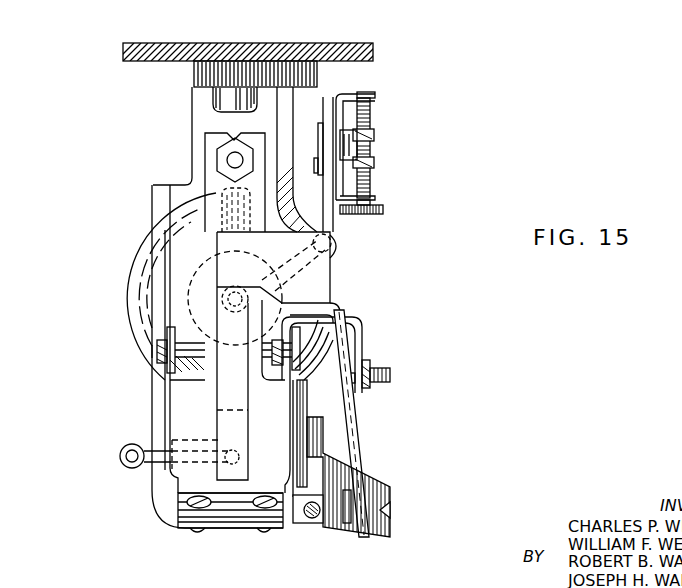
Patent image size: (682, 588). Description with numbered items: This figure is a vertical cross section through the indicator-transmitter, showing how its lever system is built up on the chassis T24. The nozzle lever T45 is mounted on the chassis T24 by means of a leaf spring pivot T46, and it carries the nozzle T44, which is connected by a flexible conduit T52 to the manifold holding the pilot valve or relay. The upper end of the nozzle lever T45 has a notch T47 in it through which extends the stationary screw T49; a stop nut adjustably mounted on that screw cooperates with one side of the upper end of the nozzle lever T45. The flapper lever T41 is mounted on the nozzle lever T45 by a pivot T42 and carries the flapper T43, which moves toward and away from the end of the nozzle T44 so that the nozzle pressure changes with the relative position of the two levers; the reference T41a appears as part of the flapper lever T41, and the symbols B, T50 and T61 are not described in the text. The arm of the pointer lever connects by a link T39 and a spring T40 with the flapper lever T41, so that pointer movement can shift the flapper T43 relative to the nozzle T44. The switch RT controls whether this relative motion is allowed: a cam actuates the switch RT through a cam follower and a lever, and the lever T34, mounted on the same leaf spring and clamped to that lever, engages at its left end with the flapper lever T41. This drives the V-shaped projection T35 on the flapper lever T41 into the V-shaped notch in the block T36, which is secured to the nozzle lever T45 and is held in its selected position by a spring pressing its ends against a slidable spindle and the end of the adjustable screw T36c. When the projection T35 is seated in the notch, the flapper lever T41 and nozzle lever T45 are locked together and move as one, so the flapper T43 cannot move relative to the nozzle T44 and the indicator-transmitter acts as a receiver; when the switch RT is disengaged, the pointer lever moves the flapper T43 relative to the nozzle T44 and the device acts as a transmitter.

The chassis T24 is at (270, 49).
The notch T47 is at (235, 136).
The stationary screw T49 is at (232, 158).
The nozzle lever T45 is at (213, 176).
The spring T40 is at (318, 133).
The link T39 is at (324, 166).
The disc / cam B is at (160, 258).
The flapper lever T41 is at (333, 223).
The pivot T50 is at (340, 252).
The axis T61 is at (215, 297).
The pivot T42 is at (288, 358).
The flapper T43 is at (233, 387).
The nozzle T44 is at (230, 442).
The lever arm extension T41a is at (357, 427).
The flexible conduit T52 is at (118, 453).
The lever T34 is at (393, 493).
The switch RT is at (405, 532).
The V-shaped projection T35 is at (341, 524).
The block T36 is at (327, 524).
The adjustable screw T36c is at (283, 474).
The leaf spring pivot T46 is at (226, 518).